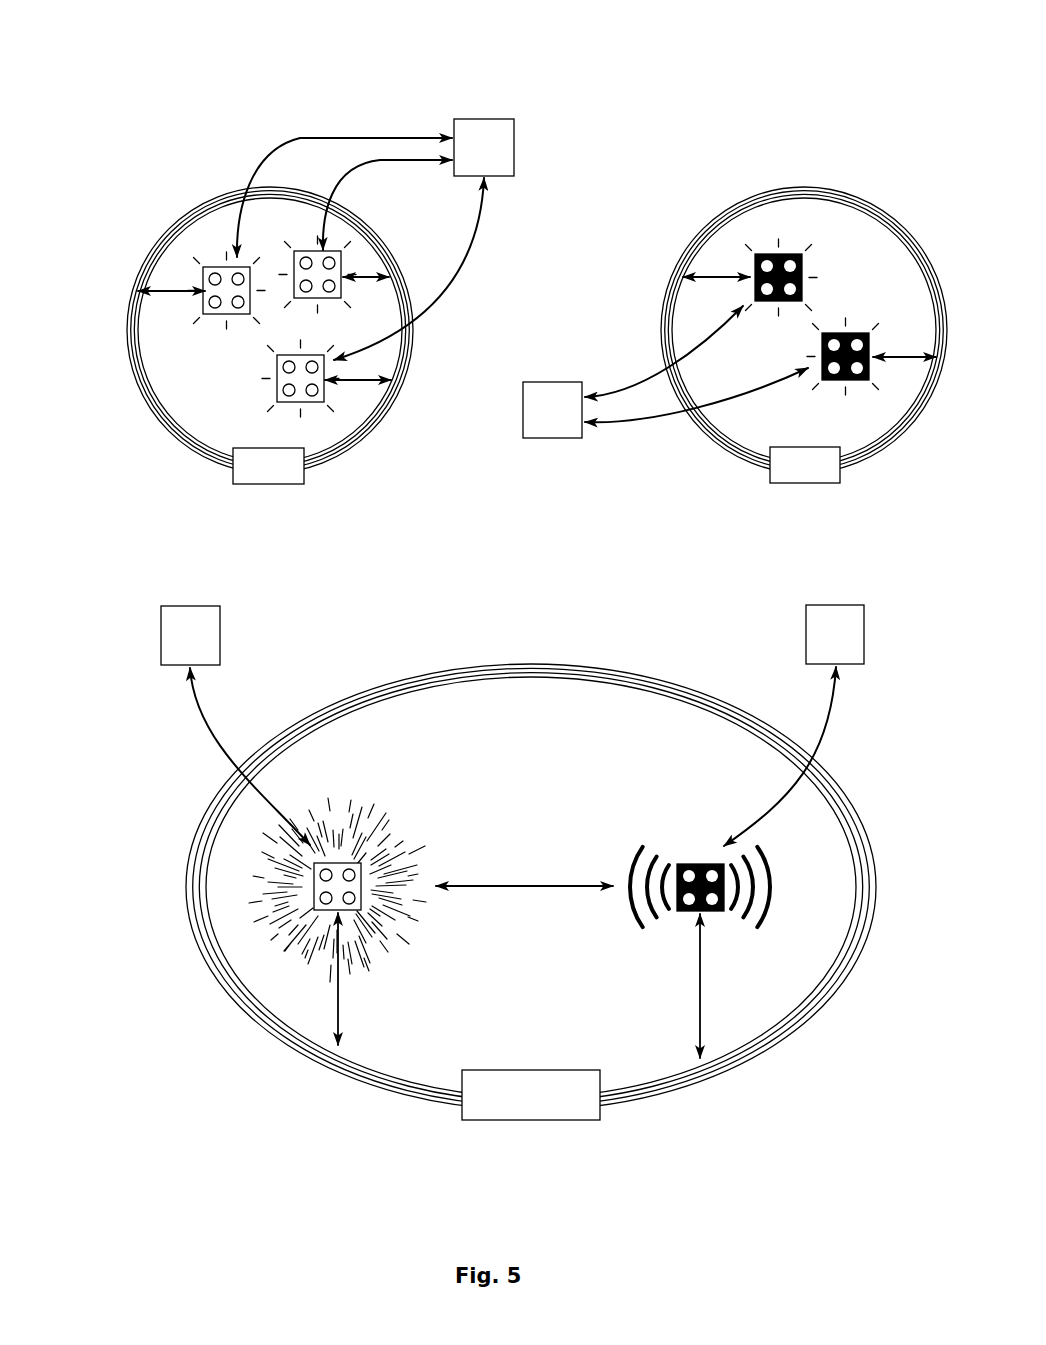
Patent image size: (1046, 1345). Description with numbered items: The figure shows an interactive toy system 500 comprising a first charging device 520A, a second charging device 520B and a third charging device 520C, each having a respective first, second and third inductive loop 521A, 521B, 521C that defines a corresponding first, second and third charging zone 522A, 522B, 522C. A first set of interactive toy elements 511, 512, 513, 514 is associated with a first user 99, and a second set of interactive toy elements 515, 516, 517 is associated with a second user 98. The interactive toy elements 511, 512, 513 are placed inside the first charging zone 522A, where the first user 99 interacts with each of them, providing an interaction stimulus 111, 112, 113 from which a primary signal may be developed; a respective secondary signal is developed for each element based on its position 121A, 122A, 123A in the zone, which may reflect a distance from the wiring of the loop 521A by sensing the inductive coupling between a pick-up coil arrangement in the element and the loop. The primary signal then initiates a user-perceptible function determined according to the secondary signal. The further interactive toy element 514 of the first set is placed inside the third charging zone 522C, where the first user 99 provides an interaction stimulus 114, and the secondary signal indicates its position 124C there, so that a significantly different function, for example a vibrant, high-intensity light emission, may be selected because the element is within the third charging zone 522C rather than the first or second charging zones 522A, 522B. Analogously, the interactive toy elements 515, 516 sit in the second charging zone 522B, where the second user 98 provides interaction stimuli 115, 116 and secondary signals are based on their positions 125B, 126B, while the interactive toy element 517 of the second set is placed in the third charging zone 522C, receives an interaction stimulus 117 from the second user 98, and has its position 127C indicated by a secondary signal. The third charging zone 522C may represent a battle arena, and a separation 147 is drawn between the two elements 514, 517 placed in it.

The interactive toy system 500 is at (122, 86).
The first user 99 is at (337, 392).
The second user 98 is at (693, 523).
The interaction stimulus 111 is at (242, 178).
The interaction stimulus 112 is at (342, 172).
The interaction stimulus 113 is at (456, 316).
The interaction stimulus 114 is at (196, 737).
The interaction stimulus 115 is at (643, 387).
The interaction stimulus 116 is at (653, 422).
The interaction stimulus 117 is at (825, 740).
The position 121A is at (173, 288).
The position 122A is at (367, 272).
The position 123A is at (357, 381).
The position 124C is at (334, 985).
The position 125B is at (720, 278).
The position 126B is at (905, 355).
The position 127C is at (703, 988).
The distance between sensors 147 is at (530, 884).
The interactive toy element 511 is at (225, 278).
The interactive toy element 512 is at (318, 246).
The interactive toy element 513 is at (304, 400).
The interactive toy element 514 is at (350, 866).
The interactive toy element 515 is at (777, 248).
The interactive toy element 516 is at (847, 328).
The interactive toy element 517 is at (683, 864).
The first charging device 520A is at (268, 466).
The second charging device 520B is at (805, 465).
The third charging device 520C is at (531, 1095).
The first inductive loop 521A is at (201, 457).
The second inductive loop 521B is at (742, 458).
The third inductive loop 521C is at (343, 1069).
The first charging zone 522A is at (192, 390).
The second charging zone 522B is at (847, 422).
The third charging zone 522C is at (478, 992).